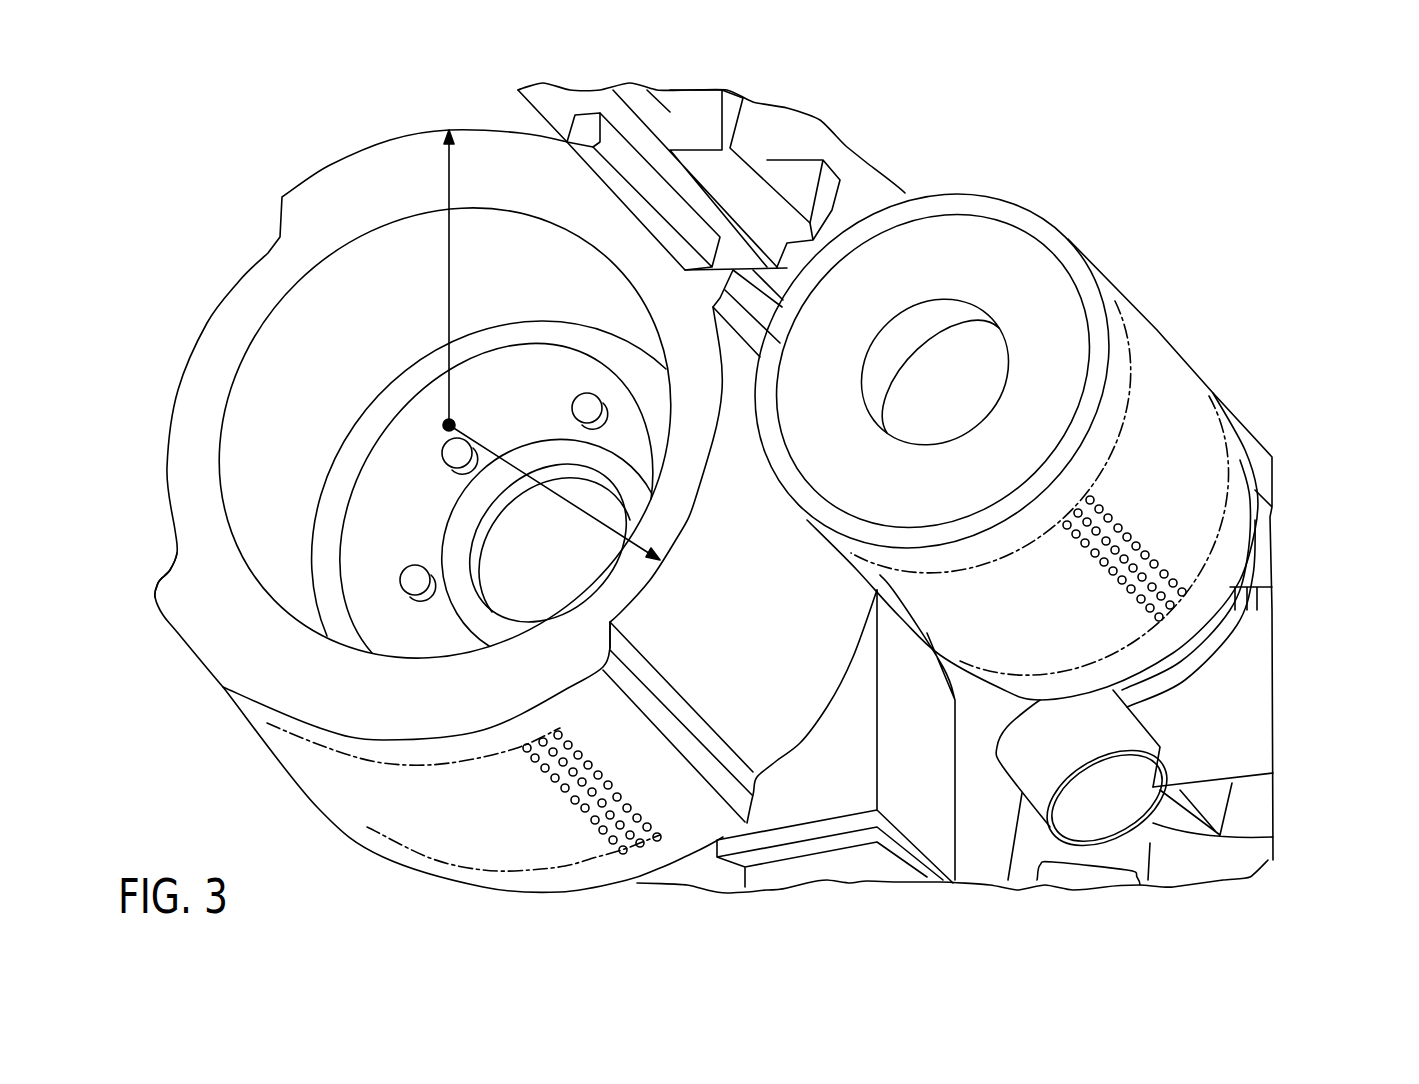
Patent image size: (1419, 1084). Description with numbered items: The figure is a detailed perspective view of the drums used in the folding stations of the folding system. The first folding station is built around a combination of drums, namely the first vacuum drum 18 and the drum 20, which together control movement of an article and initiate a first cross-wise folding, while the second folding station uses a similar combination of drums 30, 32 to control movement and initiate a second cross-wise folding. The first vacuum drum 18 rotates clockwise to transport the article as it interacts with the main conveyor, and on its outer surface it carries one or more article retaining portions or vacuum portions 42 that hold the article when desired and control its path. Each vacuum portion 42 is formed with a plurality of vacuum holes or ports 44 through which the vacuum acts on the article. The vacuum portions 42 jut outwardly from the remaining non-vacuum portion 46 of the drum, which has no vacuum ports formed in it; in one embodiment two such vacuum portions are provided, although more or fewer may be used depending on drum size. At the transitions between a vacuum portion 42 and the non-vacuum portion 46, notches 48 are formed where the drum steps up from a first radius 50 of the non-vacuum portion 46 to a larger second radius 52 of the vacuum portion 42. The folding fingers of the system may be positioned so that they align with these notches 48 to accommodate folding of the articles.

The first vacuum drum 18 is at (516, 470).
The drum 30 is at (320, 120).
The drum 20 is at (1040, 503).
The drum 32 is at (1253, 562).
The vacuum portion 42 is at (693, 830).
The vacuum ports 44 is at (575, 800).
The non-vacuum portion 46 is at (782, 700).
The notches 48 is at (162, 550).
The first radius 50 is at (490, 447).
The second radius 52 is at (447, 285).